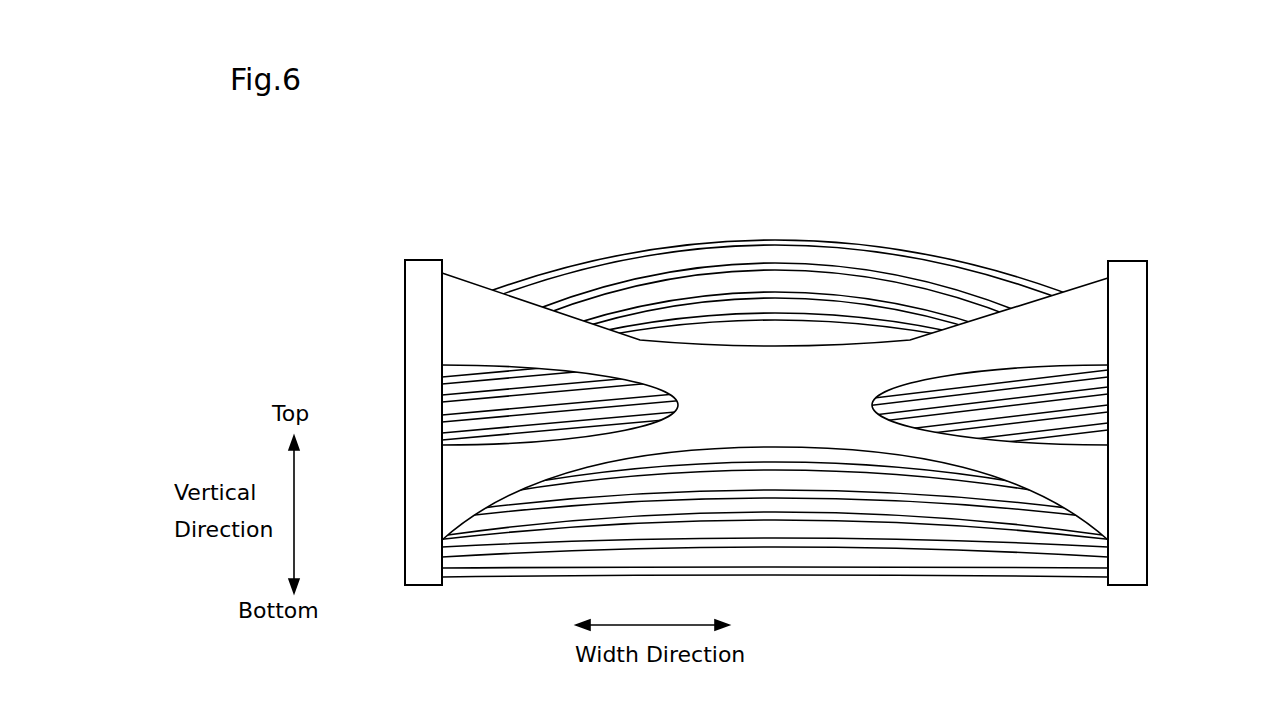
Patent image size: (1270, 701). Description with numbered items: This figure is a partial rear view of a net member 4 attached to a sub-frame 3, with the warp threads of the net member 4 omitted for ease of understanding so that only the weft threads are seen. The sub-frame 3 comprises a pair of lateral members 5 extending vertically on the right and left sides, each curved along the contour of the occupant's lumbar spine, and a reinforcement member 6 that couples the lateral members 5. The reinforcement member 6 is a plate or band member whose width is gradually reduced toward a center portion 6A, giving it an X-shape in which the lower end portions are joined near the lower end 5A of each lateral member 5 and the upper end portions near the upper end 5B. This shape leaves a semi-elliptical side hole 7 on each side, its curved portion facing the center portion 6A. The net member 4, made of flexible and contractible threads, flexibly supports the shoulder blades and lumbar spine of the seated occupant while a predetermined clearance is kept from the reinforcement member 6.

The sub-frame 3 is at (728, 434).
The net member 4 is at (962, 268).
The lateral member 5 is at (778, 427).
The lower end 5A is at (400, 580).
The upper end 5B is at (400, 275).
The reinforcement member 6 is at (457, 305).
The center portion 6A is at (788, 390).
The semi-elliptical side hole 7 is at (537, 432).